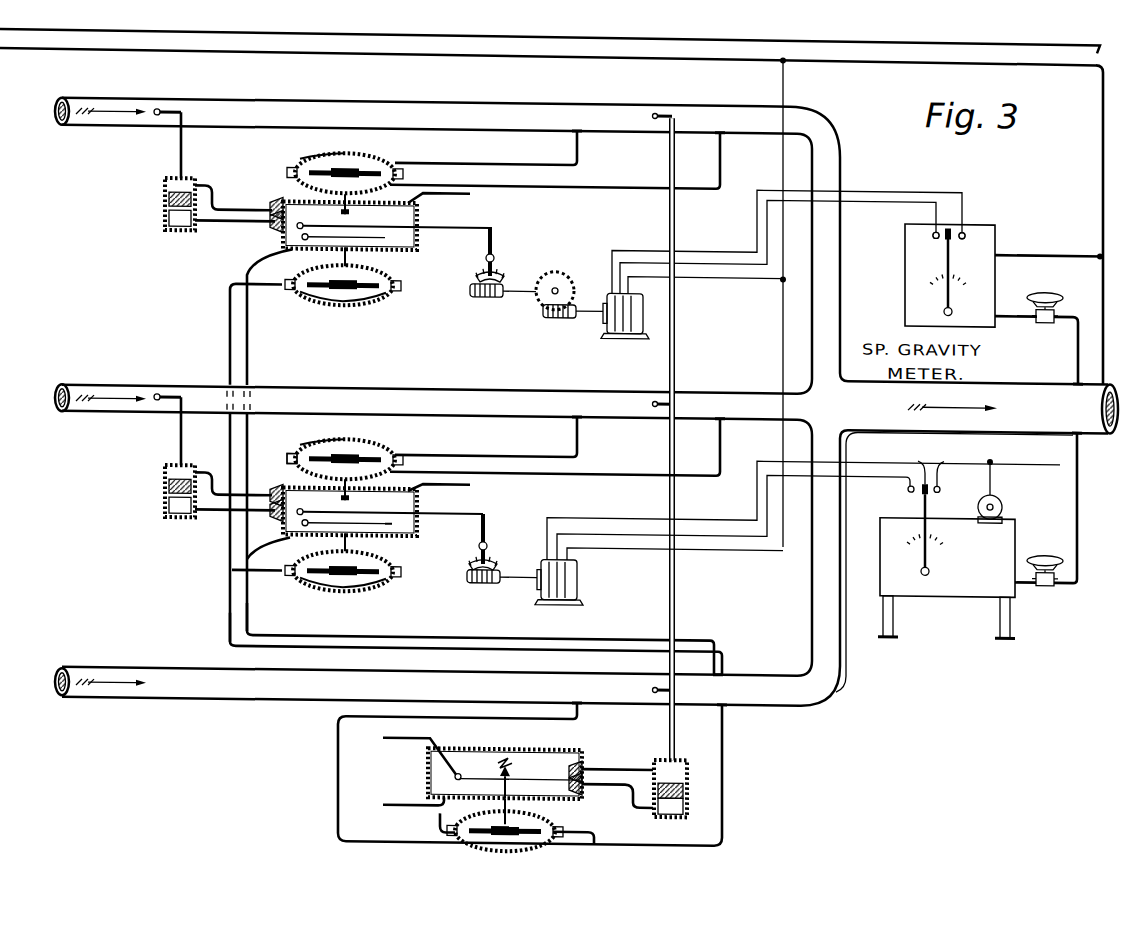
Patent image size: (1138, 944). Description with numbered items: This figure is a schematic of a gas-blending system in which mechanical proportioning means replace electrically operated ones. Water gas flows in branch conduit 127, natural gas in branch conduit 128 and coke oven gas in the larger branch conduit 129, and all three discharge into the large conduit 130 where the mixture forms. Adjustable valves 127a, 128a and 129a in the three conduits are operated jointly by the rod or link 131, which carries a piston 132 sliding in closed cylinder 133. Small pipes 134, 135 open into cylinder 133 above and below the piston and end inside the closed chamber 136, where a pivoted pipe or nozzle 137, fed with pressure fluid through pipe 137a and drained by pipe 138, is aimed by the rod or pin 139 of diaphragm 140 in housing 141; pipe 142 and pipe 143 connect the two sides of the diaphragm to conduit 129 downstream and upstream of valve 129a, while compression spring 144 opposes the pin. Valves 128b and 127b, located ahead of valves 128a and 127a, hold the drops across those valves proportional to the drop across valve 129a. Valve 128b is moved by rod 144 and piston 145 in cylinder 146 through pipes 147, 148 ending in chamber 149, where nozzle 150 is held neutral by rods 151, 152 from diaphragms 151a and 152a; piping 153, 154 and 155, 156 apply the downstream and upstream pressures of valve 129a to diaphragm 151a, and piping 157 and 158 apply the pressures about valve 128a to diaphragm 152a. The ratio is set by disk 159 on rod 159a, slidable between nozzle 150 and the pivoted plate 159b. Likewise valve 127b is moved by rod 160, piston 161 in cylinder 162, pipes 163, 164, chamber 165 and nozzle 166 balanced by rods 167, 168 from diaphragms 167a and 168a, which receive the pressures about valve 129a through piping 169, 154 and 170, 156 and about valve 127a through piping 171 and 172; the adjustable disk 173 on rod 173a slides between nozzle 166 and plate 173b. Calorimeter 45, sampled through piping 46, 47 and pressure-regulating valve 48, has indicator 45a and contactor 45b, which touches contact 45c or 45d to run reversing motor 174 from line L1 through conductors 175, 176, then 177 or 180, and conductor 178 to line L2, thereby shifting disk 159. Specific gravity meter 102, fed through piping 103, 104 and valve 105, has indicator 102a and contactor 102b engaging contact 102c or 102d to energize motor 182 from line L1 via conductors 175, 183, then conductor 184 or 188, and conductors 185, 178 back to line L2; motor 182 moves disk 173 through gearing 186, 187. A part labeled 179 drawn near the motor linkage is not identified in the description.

The line L1 is at (1040, 32).
The line L2 is at (1037, 52).
The branch conduit 127 is at (85, 97).
The adjustable valve 127a is at (655, 104).
The individually operable valve 127b is at (158, 105).
The branch conduit 128 is at (85, 384).
The adjustable valve 128a is at (655, 392).
The individually operable valve 128b is at (158, 390).
The branch conduit 129 is at (85, 666).
The adjustable valve 129a is at (652, 679).
The conduit 130 is at (974, 382).
The rod or link 131 is at (678, 583).
The piston 132 is at (700, 810).
The closed cylinder 133 is at (685, 755).
The small pipe 134 is at (632, 757).
The small pipe 135 is at (633, 800).
The closed chamber 136 is at (427, 786).
The pipe or nozzle 137 is at (496, 753).
The pipe 137a is at (405, 745).
The pipe 138 is at (397, 806).
The rod or pin 139 is at (458, 812).
The diaphragm 140 is at (528, 850).
The housing 141 is at (552, 830).
The pipe 142 is at (723, 771).
The pipe 143 is at (338, 773).
The compression spring; rod 144 is at (178, 438).
The piston 145 is at (165, 488).
The closed cylinder 146 is at (165, 514).
The pipe 147 is at (211, 467).
The pipe 148 is at (210, 515).
The chamber 149 is at (445, 497).
The nozzle 150 is at (298, 455).
The rod 151 is at (385, 558).
The diaphragm 151a is at (383, 585).
The rod 152 is at (363, 449).
The diaphragm 152a is at (312, 441).
The piping 153 is at (281, 552).
The piping 154 is at (252, 626).
The piping 155 is at (286, 573).
The piping 156 is at (228, 617).
The piping 157 is at (625, 468).
The piping 158 is at (498, 444).
The disk or abutment 159 is at (335, 496).
The rod 159a is at (470, 510).
The rod or plate 159b is at (420, 524).
The rod 160 is at (178, 152).
The piston 161 is at (165, 200).
The closed cylinder 162 is at (165, 226).
The pipe 163 is at (210, 185).
The pipe 164 is at (211, 224).
The chamber 165 is at (322, 196).
The nozzle 166 is at (270, 197).
The rod 167 is at (385, 283).
The diaphragm 167a is at (372, 297).
The rod 168 is at (365, 160).
The diaphragm 168a is at (312, 156).
The piping 169 is at (250, 317).
The piping 170 is at (228, 312).
The piping 171 is at (580, 181).
The piping 172 is at (488, 157).
The adjustable disk 173 is at (287, 233).
The rod 173a is at (460, 216).
The rod or plate 173b is at (262, 258).
The motor 174 is at (578, 581).
The conductor 175 is at (1100, 140).
The conductor 176 is at (992, 450).
The conductor 177 is at (752, 491).
The conductor 178 is at (733, 538).
The lever 179 is at (495, 560).
The conductor 180 is at (908, 478).
The motor 182 is at (603, 325).
The conductor 183 is at (1052, 241).
The conductor 184 is at (905, 191).
The conductor 185 is at (745, 271).
The gearing 186 is at (547, 305).
The gearing 187 is at (475, 284).
The conductor 188 is at (940, 181).
The specific gravity meter 102 is at (985, 258).
The indicator 102a is at (946, 292).
The contactor 102b is at (965, 222).
The contact 102c is at (932, 228).
The contact 102d is at (950, 216).
The piping 103 is at (1076, 345).
The piping 104 is at (1012, 307).
The pressure-regulating valve 105 is at (1056, 277).
The calorimeter 45 is at (946, 578).
The indicator 45a is at (918, 551).
The contactor 45b is at (918, 462).
The contact 45c is at (940, 462).
The contact 45d is at (905, 480).
The piping 46 is at (1080, 535).
The piping 47 is at (1050, 577).
The pressure-regulating valve 48 is at (1045, 535).